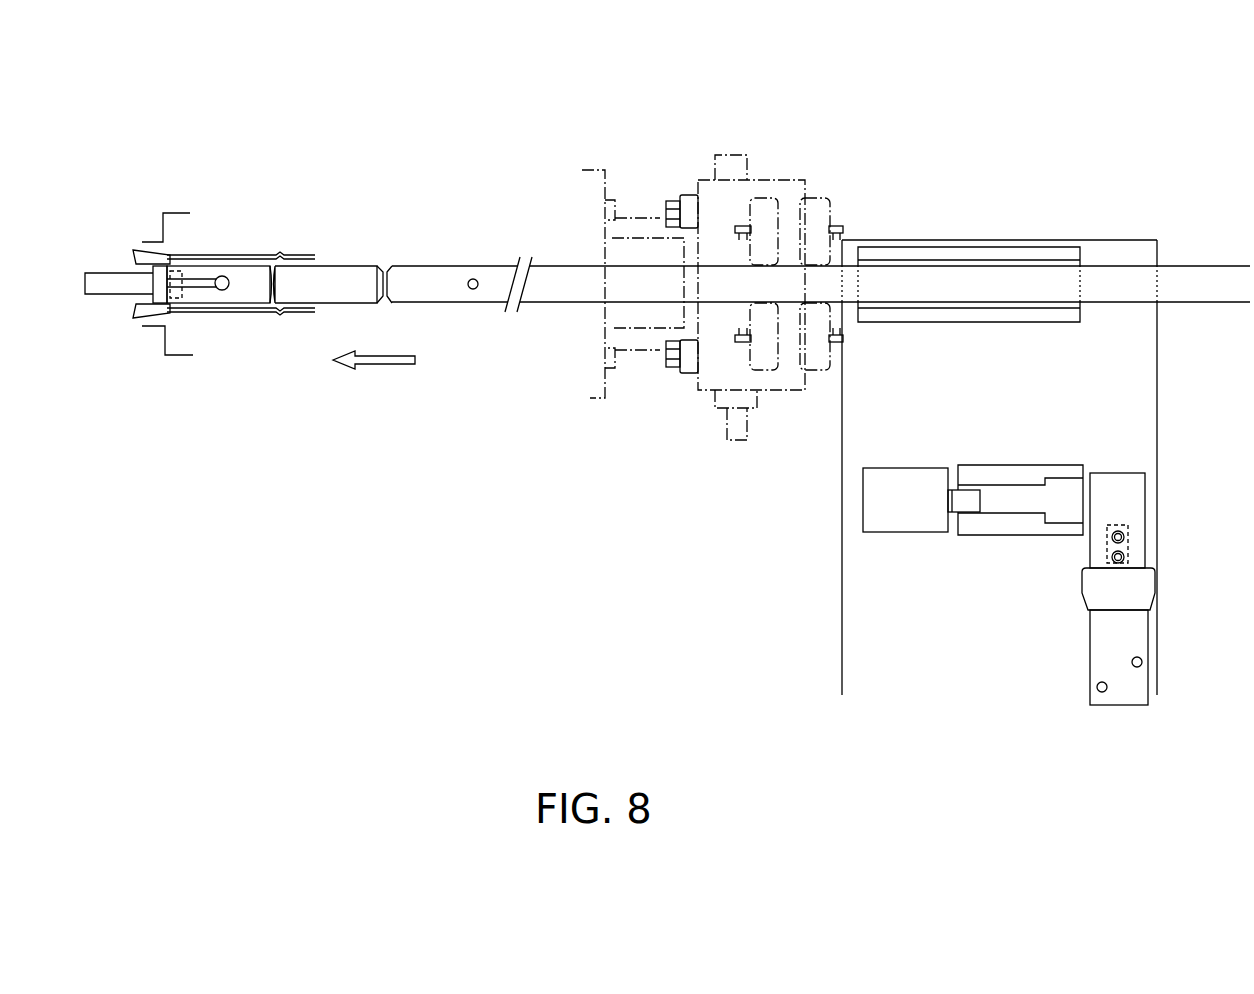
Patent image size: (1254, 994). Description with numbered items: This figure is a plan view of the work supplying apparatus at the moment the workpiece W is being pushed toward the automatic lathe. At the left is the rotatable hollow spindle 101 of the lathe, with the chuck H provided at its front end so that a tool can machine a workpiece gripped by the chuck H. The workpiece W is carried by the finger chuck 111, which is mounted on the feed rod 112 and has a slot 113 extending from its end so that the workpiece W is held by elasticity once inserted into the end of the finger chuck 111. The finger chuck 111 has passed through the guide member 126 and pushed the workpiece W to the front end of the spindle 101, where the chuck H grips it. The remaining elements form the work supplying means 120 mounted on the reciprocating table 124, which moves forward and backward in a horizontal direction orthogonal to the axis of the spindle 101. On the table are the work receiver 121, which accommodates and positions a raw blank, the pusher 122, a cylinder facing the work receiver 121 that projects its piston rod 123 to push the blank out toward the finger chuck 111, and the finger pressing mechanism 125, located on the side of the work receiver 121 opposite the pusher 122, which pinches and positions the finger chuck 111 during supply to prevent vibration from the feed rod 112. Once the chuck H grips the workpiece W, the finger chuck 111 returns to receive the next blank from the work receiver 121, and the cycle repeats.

The chuck H is at (138, 257).
The workpiece W is at (112, 287).
The spindle 101 is at (638, 230).
The finger chuck 111 is at (253, 277).
The feed rod 112 is at (430, 277).
The slot 113 is at (208, 280).
The work supplying means 120 is at (1236, 157).
The work receiver 121 is at (1030, 518).
The pusher 122 is at (890, 517).
The piston rod 123 is at (967, 503).
The reciprocating table 124 is at (1133, 418).
The finger pressing mechanism 125 is at (1135, 510).
The guide member 126 is at (1010, 257).